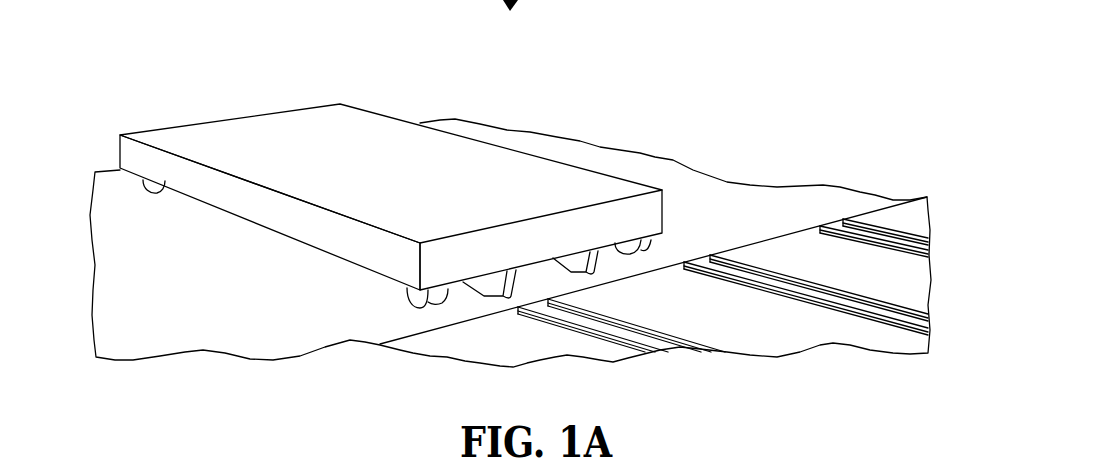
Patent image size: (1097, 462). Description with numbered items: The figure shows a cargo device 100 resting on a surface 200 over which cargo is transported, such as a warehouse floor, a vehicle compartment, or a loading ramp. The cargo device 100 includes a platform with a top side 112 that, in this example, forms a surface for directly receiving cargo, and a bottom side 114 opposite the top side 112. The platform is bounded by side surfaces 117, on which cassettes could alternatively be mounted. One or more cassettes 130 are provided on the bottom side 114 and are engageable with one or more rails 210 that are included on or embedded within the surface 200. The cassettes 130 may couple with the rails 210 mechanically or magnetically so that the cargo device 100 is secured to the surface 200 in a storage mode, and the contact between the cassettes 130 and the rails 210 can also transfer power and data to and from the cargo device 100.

The cargo device 100 is at (367, 171).
The top side 112 is at (518, 170).
The side surface 117 is at (182, 172).
The bottom side 114 is at (240, 238).
The cassette 130 is at (513, 283).
The surface 200 is at (285, 316).
The rails 210 is at (637, 328).